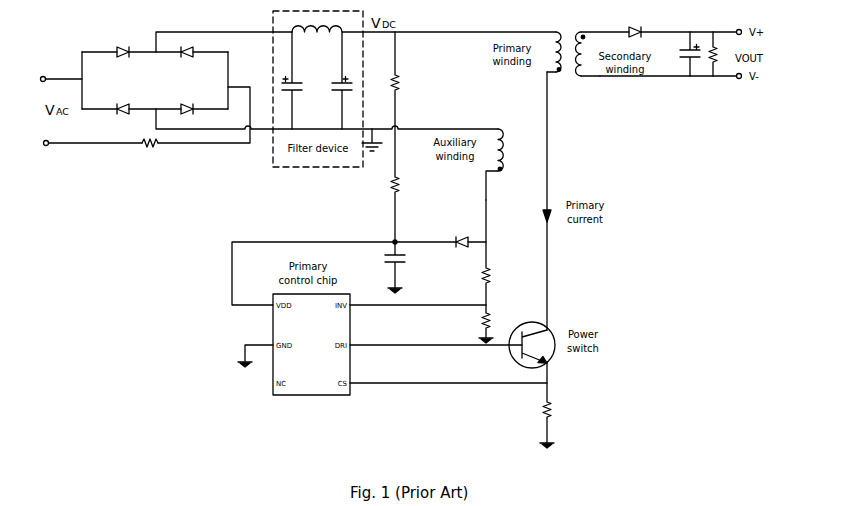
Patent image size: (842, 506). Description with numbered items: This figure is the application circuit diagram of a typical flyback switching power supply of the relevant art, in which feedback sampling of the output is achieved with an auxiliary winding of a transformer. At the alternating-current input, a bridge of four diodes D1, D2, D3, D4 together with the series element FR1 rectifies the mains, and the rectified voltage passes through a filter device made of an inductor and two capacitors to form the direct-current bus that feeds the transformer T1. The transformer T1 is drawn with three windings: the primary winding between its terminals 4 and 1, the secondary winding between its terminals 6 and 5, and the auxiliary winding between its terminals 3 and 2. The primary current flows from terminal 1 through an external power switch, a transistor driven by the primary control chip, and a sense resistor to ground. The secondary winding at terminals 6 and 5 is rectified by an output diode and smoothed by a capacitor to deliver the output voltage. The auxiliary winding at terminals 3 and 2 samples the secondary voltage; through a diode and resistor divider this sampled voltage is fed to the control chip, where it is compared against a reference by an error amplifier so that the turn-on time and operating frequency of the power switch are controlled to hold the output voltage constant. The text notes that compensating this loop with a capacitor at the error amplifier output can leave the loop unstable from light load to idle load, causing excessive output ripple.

The rectifier diode D1 is at (187, 58).
The rectifier diode D2 is at (122, 58).
The rectifier diode D3 is at (122, 103).
The rectifier diode D4 is at (186, 103).
The fuse resistor FR1 is at (148, 149).
The transformer T1 is at (543, 110).
The primary winding terminal 1 is at (555, 78).
The auxiliary winding terminal 2 is at (497, 183).
The auxiliary winding terminal 3 is at (503, 143).
The primary winding terminal 4 is at (556, 46).
The secondary winding terminal 5 is at (590, 82).
The secondary winding terminal 6 is at (581, 48).